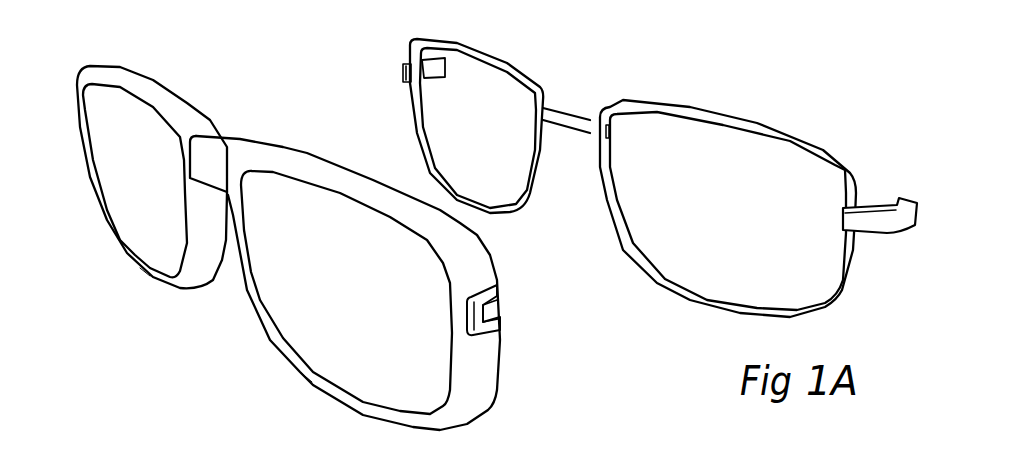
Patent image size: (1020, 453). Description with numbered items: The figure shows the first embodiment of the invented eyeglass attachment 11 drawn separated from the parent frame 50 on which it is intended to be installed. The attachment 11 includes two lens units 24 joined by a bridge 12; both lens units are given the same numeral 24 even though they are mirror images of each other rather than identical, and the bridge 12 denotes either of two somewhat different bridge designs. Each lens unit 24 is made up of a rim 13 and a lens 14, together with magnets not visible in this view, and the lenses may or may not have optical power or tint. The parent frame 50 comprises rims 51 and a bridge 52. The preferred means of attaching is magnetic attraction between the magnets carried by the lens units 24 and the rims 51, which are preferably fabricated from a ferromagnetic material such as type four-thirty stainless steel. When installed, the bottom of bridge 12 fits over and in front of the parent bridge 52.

The attachment 11 is at (262, 70).
The bridge 12 is at (223, 143).
The rim 13 is at (140, 87).
The lens 14 is at (152, 197).
The lens unit 24 is at (143, 292).
The parent frame 50 is at (690, 78).
The rim 51 is at (480, 48).
The bridge 52 is at (573, 107).